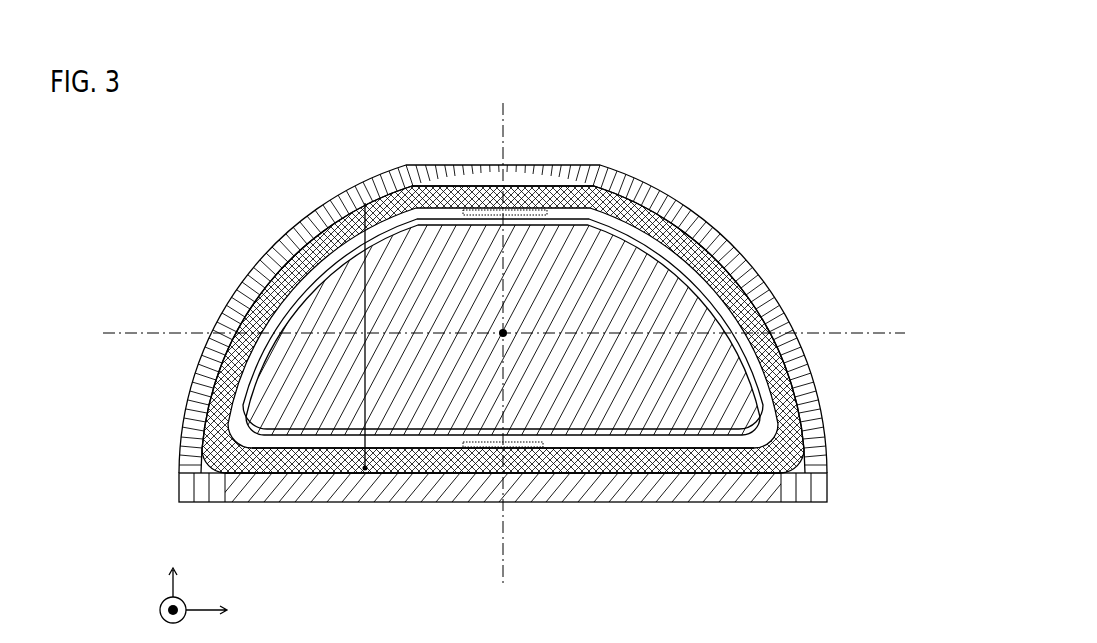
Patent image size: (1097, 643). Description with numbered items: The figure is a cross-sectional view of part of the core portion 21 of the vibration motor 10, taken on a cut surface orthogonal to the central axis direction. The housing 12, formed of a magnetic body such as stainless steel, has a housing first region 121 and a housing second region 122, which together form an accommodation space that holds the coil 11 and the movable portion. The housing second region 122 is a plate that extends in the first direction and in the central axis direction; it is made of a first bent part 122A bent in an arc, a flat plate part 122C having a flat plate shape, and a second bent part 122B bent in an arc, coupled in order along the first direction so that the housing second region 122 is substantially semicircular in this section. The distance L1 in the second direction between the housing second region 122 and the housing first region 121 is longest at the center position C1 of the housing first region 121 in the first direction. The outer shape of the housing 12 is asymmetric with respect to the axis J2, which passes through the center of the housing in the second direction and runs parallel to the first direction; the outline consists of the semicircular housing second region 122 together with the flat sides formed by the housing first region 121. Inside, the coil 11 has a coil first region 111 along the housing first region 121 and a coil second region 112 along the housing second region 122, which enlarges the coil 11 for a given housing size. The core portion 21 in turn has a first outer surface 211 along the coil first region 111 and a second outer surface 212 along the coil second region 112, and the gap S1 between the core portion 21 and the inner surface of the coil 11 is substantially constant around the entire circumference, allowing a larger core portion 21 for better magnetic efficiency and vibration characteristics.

The vibration motor 10 is at (772, 46).
The coil 11 is at (543, 329).
The coil first region 111 is at (705, 457).
The coil second region 112 is at (770, 366).
The housing 12 is at (548, 364).
The housing first region 121 is at (757, 495).
The housing second region 122 is at (820, 450).
The first bent part 122A is at (333, 207).
The second bent part 122B is at (695, 214).
The flat plate part 122C is at (548, 172).
The core portion 21 is at (504, 394).
The first outer surface 211 is at (610, 428).
The second outer surface 212 is at (690, 274).
The gap S1 is at (654, 234).
The center position C1 is at (503, 562).
The axis J2 is at (132, 332).
The distance L1 is at (352, 337).